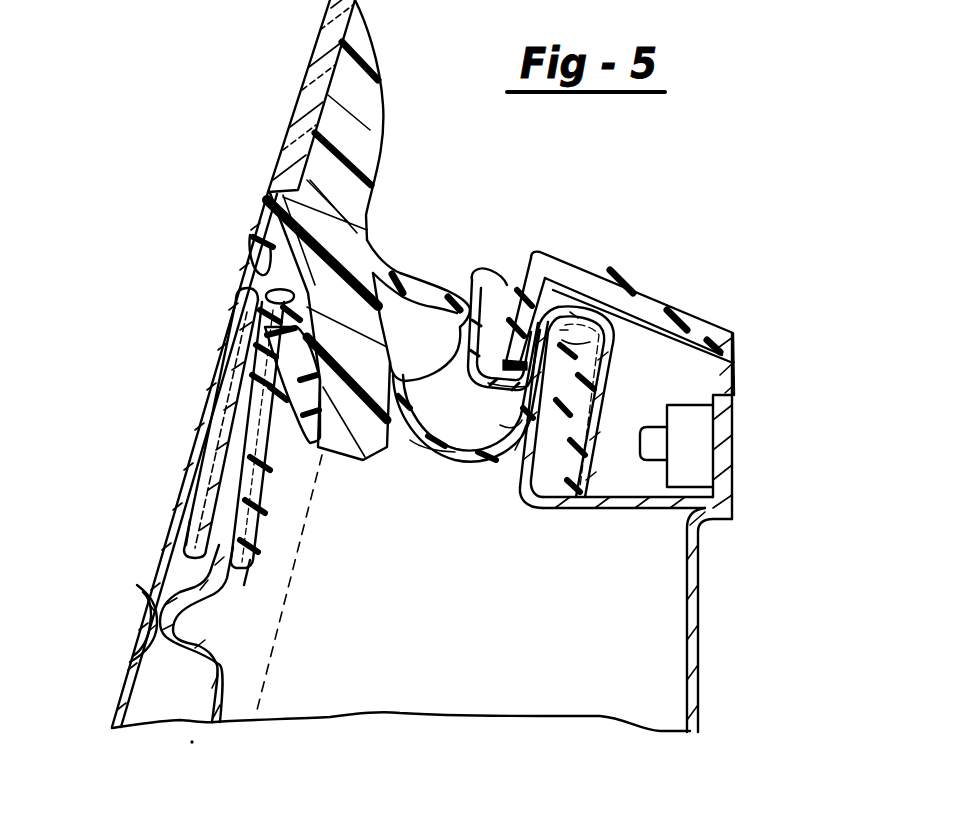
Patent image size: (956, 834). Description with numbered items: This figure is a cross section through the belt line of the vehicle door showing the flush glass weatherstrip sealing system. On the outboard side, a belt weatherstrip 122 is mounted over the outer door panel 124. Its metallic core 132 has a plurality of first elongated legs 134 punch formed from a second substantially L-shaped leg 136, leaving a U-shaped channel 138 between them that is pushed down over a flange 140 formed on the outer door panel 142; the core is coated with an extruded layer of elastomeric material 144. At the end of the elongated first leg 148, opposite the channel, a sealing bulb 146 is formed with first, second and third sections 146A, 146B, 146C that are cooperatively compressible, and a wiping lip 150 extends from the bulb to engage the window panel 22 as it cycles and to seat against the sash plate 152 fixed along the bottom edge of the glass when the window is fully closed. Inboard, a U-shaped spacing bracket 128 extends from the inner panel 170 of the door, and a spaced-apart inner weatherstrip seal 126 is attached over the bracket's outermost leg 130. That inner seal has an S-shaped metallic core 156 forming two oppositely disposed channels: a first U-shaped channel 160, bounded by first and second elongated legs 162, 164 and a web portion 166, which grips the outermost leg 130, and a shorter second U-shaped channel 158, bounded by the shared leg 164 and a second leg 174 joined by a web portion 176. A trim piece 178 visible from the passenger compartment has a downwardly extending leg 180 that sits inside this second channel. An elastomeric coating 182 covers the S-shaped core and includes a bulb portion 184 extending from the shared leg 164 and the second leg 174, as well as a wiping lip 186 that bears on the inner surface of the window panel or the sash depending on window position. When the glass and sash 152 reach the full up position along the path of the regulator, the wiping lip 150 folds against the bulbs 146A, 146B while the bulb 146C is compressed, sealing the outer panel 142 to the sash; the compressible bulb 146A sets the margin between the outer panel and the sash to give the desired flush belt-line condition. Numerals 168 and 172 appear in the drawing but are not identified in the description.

The window panel 22 is at (304, 101).
The belt weatherstrip 122 is at (228, 256).
The outer door panel 124 is at (170, 495).
The inner weatherstrip seal 126 is at (503, 458).
The U-shaped spacing bracket 128 is at (634, 510).
The outermost leg 130 is at (613, 362).
The metallic core 132 is at (253, 520).
The first elongated legs 134 is at (190, 523).
The second substantially L-shaped leg 136 is at (253, 553).
The U-shaped channel 138 is at (242, 440).
The flange 140 is at (217, 566).
The outer door panel 142 is at (118, 688).
The elastomeric material 144 is at (270, 480).
The sealing bulb 146 is at (240, 333).
The first section 146A is at (257, 263).
The second section 146B is at (250, 290).
The third section 146C is at (363, 462).
The elongated first leg 148 is at (266, 300).
The wiping lip 150 is at (360, 232).
The sash plate 152 is at (365, 133).
The metallic core 156 is at (556, 480).
The second U-shaped channel 158 is at (485, 388).
The first U-shaped channel 160 is at (580, 332).
The first elongated leg 162 is at (542, 482).
The second elongated leg 164 is at (592, 440).
The web portion 166 is at (570, 297).
The seal lower wall 168 is at (520, 480).
The inner panel 170 is at (700, 585).
The seal skin 172 is at (520, 420).
The second leg 174 is at (458, 292).
The web portion 176 is at (448, 340).
The trim piece 178 is at (573, 262).
The downwardly extending leg 180 is at (513, 290).
The elastomeric coating 182 is at (620, 332).
The bulb portion 184 is at (460, 457).
The wiping lip 186 is at (426, 283).